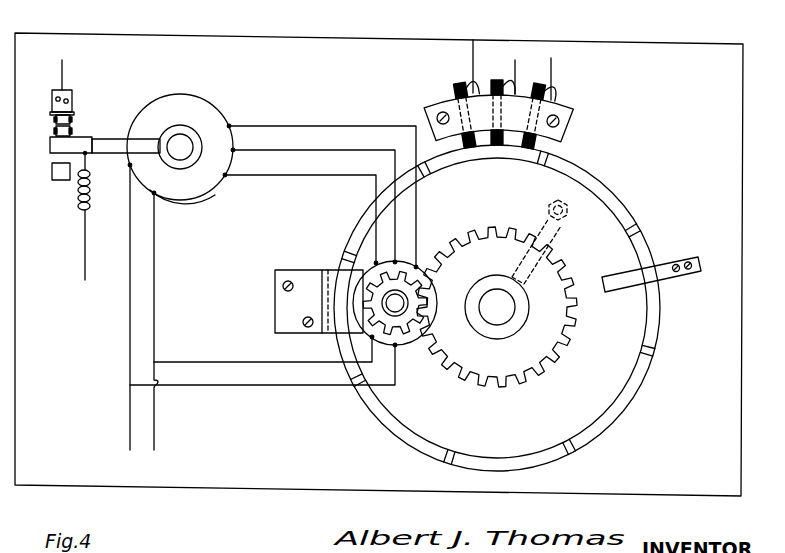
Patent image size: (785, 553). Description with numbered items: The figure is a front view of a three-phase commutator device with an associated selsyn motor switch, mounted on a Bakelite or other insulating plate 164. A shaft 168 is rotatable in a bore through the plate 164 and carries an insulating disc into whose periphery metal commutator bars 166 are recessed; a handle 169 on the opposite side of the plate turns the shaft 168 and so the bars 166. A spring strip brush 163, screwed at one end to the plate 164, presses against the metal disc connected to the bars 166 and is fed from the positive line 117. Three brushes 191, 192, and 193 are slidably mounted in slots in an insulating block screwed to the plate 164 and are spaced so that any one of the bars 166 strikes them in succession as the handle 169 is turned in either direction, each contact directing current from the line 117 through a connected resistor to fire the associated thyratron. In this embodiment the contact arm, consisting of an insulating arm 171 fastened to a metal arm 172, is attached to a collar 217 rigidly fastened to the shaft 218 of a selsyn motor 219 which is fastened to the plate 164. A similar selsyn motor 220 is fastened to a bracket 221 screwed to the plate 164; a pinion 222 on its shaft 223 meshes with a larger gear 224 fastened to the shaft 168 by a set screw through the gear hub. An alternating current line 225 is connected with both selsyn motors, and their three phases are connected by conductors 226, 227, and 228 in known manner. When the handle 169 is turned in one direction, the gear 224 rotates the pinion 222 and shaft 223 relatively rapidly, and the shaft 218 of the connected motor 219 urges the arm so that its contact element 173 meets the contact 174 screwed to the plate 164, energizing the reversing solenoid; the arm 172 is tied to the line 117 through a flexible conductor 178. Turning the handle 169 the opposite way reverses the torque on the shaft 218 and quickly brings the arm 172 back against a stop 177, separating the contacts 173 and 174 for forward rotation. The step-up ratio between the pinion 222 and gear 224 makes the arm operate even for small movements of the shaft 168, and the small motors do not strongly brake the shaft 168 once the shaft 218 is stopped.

The positive line 117 is at (612, 190).
The spring strip brush 163 is at (682, 258).
The insulating plate 164 is at (250, 33).
The commutator bars 166 is at (656, 348).
The shaft 168 is at (497, 339).
The handle 169 is at (560, 233).
The insulating arm 171 is at (110, 153).
The metal arm 172 is at (58, 146).
The contact element 173 is at (72, 133).
The contact 174 is at (72, 118).
The stop 177 is at (63, 181).
The flexible conductor 178 is at (82, 230).
The brush 191 is at (457, 88).
The brush 192 is at (499, 84).
The brush 193 is at (550, 99).
The collar 217 is at (178, 122).
The shaft 218 is at (192, 136).
The selsyn motor 219 is at (215, 199).
The selsyn motor 220 is at (419, 268).
The bracket 221 is at (336, 270).
The pinion 222 is at (372, 335).
The shaft 223 is at (406, 303).
The gear 224 is at (542, 378).
The alternating current line 225 is at (130, 450).
The conductor 226 is at (274, 175).
The conductor 227 is at (274, 150).
The conductor 228 is at (274, 126).